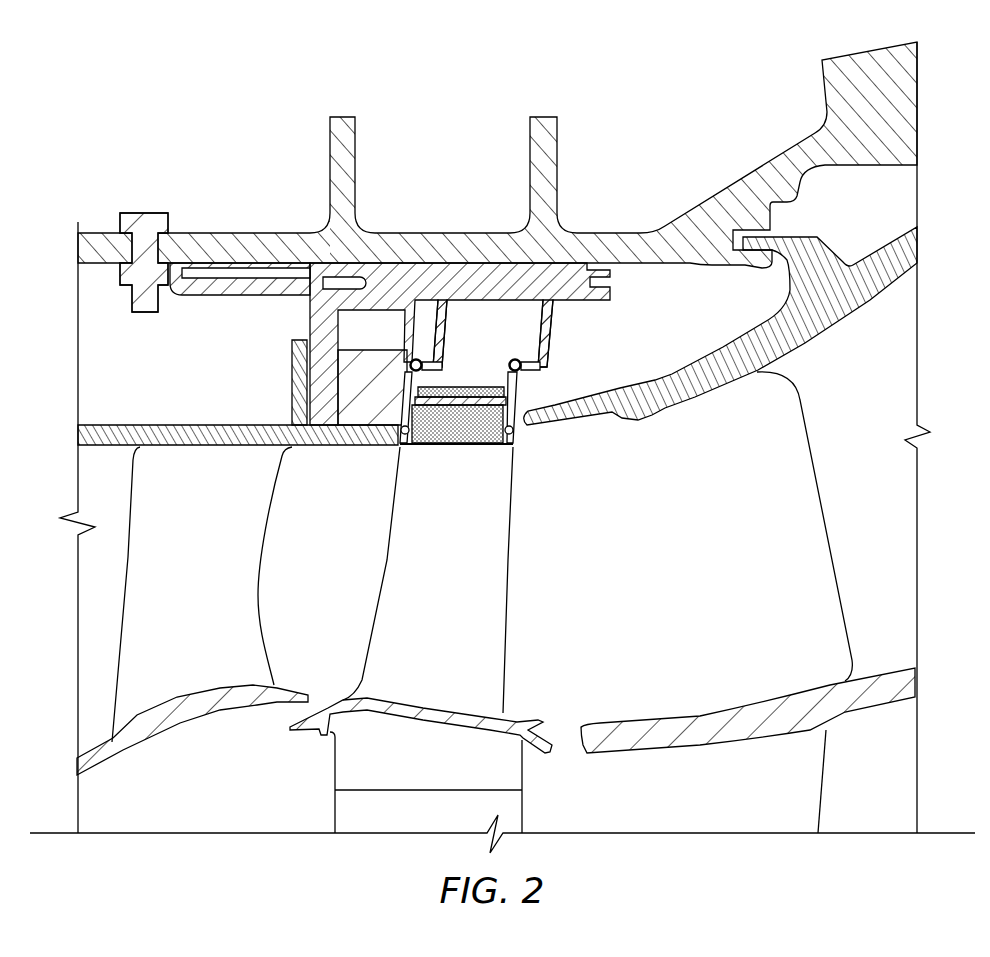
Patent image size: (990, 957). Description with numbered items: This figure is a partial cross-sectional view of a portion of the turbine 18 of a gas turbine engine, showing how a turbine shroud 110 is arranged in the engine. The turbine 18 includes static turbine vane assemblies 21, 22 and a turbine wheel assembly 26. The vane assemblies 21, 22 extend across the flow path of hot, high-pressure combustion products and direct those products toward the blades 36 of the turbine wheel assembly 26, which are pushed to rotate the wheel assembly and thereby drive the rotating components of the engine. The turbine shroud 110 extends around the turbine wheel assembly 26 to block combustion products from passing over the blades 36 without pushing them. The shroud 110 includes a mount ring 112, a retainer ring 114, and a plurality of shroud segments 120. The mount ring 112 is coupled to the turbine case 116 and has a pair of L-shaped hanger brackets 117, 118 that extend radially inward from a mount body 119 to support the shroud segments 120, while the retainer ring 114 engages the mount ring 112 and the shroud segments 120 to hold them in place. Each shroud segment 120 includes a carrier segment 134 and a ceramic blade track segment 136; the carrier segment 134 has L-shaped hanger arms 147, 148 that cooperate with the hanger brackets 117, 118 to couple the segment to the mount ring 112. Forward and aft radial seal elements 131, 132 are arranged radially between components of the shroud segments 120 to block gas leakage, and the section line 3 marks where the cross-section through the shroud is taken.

The turbine 18 is at (235, 185).
The static turbine vane assembly 21 is at (125, 558).
The static turbine vane assembly 22 is at (828, 490).
The turbine wheel assembly 26 is at (532, 700).
The blades 36 is at (480, 597).
The section line 3- 3 is at (477, 381).
The turbine shroud 110 is at (606, 328).
The mount ring 112 is at (241, 300).
The retainer ring 114 is at (393, 343).
The turbine case 116 is at (782, 150).
The L-shaped hanger bracket 117 is at (412, 316).
The L-shaped hanger bracket 118 is at (556, 340).
The mount body 119 is at (421, 350).
The shroud segments 120 is at (515, 434).
The forward radial seal element 131 is at (398, 438).
The aft radial seal element 132 is at (517, 438).
The carrier segment 134 is at (524, 395).
The ceramic blade track segment 136 is at (435, 452).
The L-shaped hanger arm 147 is at (463, 315).
The L-shaped hanger arm 148 is at (522, 350).